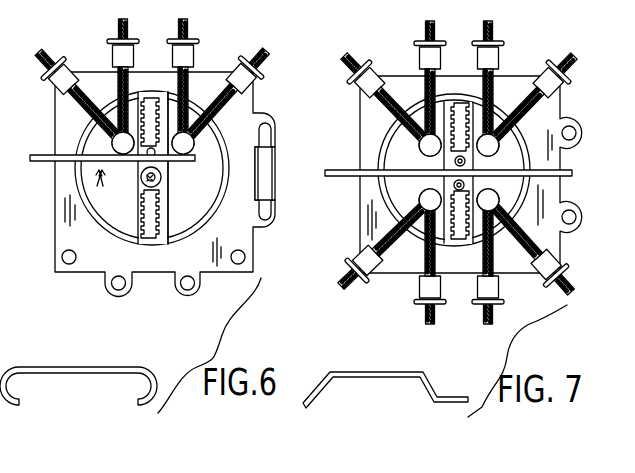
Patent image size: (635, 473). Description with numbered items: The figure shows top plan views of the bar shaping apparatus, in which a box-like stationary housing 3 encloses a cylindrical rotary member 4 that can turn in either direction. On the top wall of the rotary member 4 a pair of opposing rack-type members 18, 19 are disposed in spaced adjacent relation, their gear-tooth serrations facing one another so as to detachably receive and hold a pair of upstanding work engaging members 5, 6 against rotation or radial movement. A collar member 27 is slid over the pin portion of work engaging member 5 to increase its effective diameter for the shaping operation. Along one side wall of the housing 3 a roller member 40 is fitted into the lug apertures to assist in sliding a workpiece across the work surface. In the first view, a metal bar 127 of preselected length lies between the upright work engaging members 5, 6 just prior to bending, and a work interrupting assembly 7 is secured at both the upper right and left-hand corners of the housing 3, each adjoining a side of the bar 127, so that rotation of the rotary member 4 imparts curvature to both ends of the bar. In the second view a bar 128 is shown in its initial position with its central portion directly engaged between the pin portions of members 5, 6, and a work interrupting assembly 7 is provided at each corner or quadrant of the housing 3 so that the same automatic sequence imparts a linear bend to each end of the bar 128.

In FIG. 7, the stationary housing 3 is at (467, 85).
In FIG. 7, the rotary member 4 is at (512, 142).
In FIG. 6, the work engaging member 5 is at (158, 186).
In FIG. 7, the work engaging member 5 is at (466, 186).
In FIG. 6, the work engaging member 6 is at (142, 178).
In FIG. 7, the work engaging member 6 is at (467, 163).
In FIG. 6, the work interrupting assembly 7 is at (113, 80).
In FIG. 7, the work interrupting assembly 7 is at (412, 86).
In FIG. 6, the rack-type member 18 is at (141, 216).
In FIG. 6, the rack-type member 19 is at (159, 214).
In FIG. 6, the collar member 27 is at (152, 170).
In FIG. 6, the roller member 40 is at (276, 172).
In FIG. 6, the metal bar 127 is at (52, 153).
In FIG. 7, the bar 128 is at (364, 170).